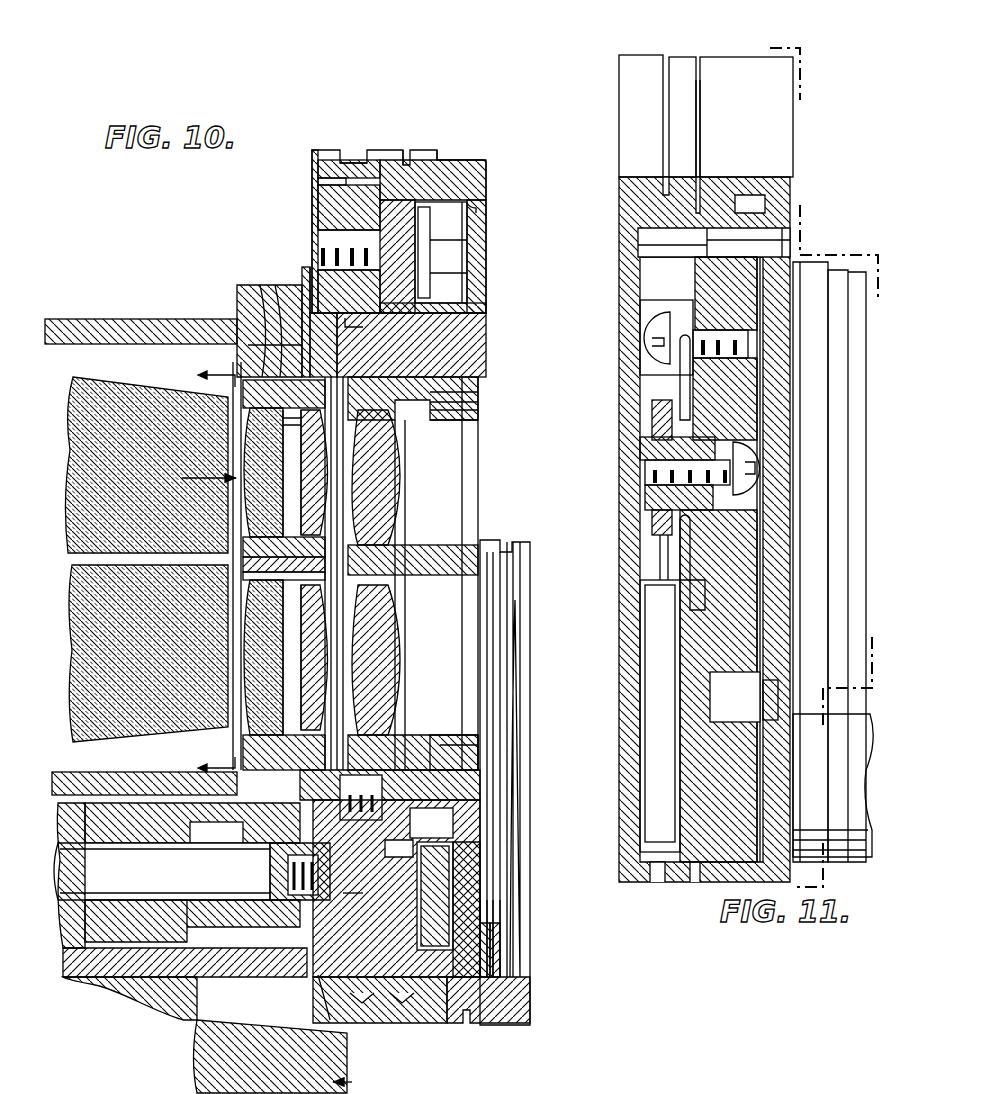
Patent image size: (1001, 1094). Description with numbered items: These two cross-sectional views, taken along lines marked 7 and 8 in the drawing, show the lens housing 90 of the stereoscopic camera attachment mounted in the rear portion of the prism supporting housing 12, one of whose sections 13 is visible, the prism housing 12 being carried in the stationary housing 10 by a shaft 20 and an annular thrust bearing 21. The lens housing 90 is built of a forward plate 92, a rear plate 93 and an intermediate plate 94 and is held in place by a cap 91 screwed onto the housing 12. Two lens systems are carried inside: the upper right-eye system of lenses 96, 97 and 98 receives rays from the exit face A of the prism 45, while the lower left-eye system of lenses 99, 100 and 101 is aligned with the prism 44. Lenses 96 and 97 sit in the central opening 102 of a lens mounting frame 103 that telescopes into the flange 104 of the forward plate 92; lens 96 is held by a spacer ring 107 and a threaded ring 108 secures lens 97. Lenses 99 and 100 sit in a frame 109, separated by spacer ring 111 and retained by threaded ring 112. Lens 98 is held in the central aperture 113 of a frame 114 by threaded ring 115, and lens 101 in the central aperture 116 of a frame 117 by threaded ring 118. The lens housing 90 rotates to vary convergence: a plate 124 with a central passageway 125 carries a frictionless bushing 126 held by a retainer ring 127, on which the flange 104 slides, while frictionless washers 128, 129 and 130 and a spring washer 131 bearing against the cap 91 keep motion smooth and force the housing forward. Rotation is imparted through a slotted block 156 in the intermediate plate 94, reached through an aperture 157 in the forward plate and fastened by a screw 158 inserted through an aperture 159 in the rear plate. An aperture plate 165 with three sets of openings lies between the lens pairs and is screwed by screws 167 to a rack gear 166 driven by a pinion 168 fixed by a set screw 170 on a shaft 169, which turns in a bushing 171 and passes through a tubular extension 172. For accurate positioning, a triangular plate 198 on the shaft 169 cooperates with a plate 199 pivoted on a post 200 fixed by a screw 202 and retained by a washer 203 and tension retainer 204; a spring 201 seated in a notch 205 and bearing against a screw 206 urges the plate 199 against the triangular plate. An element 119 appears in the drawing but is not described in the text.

In FIG. 11, the section line 7- 7 is at (824, 465).
In FIG. 10, the section line 8- 8 is at (201, 574).
In FIG. 10, the stationary housing 10 is at (357, 1083).
In FIG. 10, the prism supporting housing 12 is at (150, 1028).
In FIG. 10, the section 13 is at (120, 975).
In FIG. 10, the shaft 20 is at (380, 605).
In FIG. 10, the annular thrust bearing 21 is at (190, 1033).
In FIG. 10, the prism 44 is at (144, 773).
In FIG. 10, the prism 45 is at (96, 380).
In FIG. 10, the lens housing 90 is at (352, 148).
In FIG. 10, the cap 91 is at (510, 1020).
In FIG. 10, the forward plate 92 is at (412, 152).
In FIG. 11, the forward plate 92 is at (727, 62).
In FIG. 10, the rear plate 93 is at (468, 160).
In FIG. 11, the rear plate 93 is at (636, 58).
In FIG. 10, the intermediate plate 94 is at (432, 150).
In FIG. 11, the intermediate plate 94 is at (680, 58).
In FIG. 10, the lens 96 is at (258, 503).
In FIG. 10, the lens 97 is at (310, 458).
In FIG. 10, the lens 98 is at (375, 478).
In FIG. 10, the lens 99 is at (258, 665).
In FIG. 10, the lens 100 is at (310, 640).
In FIG. 10, the lens 101 is at (435, 562).
In FIG. 10, the central opening 102 is at (265, 530).
In FIG. 10, the lens mounting frame 103 is at (236, 364).
In FIG. 10, the flange 104 is at (300, 300).
In FIG. 10, the spacer ring 107 is at (315, 420).
In FIG. 10, the threaded ring 108 is at (330, 393).
In FIG. 10, the frame 109 is at (300, 750).
In FIG. 10, the spacer ring 111 is at (300, 610).
In FIG. 10, the threaded ring 112 is at (325, 600).
In FIG. 10, the central aperture 113 is at (430, 409).
In FIG. 10, the frame 114 is at (455, 378).
In FIG. 10, the threaded ring 115 is at (440, 397).
In FIG. 10, the central aperture 116 is at (360, 715).
In FIG. 10, the frame 117 is at (456, 748).
In FIG. 10, the threaded ring 118 is at (480, 720).
In FIG. 11, the plate 119 is at (665, 420).
In FIG. 10, the plate 124 is at (262, 315).
In FIG. 10, the central passageway 125 is at (255, 330).
In FIG. 10, the frictionless bushing 126 is at (262, 330).
In FIG. 10, the retainer ring 127 is at (255, 345).
In FIG. 10, the frictionless washer 128 is at (306, 270).
In FIG. 10, the frictionless washer 129 is at (488, 962).
In FIG. 10, the frictionless washer 130 is at (480, 933).
In FIG. 10, the spring washer 131 is at (497, 908).
In FIG. 10, the block 156 is at (330, 203).
In FIG. 10, the aperture 157 is at (318, 182).
In FIG. 10, the screw 158 is at (450, 257).
In FIG. 10, the aperture 159 is at (478, 206).
In FIG. 10, the aperture plate 165 is at (340, 535).
In FIG. 11, the aperture plate 165 is at (760, 580).
In FIG. 10, the rack gear 166 is at (428, 740).
In FIG. 11, the rack gear 166 is at (748, 683).
In FIG. 10, the screws 167 is at (355, 792).
In FIG. 11, the screws 167 is at (773, 697).
In FIG. 10, the pinion 168 is at (385, 968).
In FIG. 10, the shaft 169 is at (192, 823).
In FIG. 10, the set screw 170 is at (285, 878).
In FIG. 10, the bushing 171 is at (385, 855).
In FIG. 10, the tubular extension 172 is at (78, 965).
In FIG. 11, the tubular extension 172 is at (850, 745).
In FIG. 10, the triangular plate 198 is at (440, 950).
In FIG. 10, the plate 199 is at (452, 888).
In FIG. 11, the plate 199 is at (657, 638).
In FIG. 11, the post 200 is at (652, 493).
In FIG. 11, the spring 201 is at (656, 567).
In FIG. 11, the screw 202 is at (648, 468).
In FIG. 11, the washer 203 is at (666, 530).
In FIG. 11, the tension retainer 204 is at (660, 518).
In FIG. 11, the notch 205 is at (696, 597).
In FIG. 11, the screw 206 is at (650, 330).
In FIG. 10, the exit face A is at (195, 478).